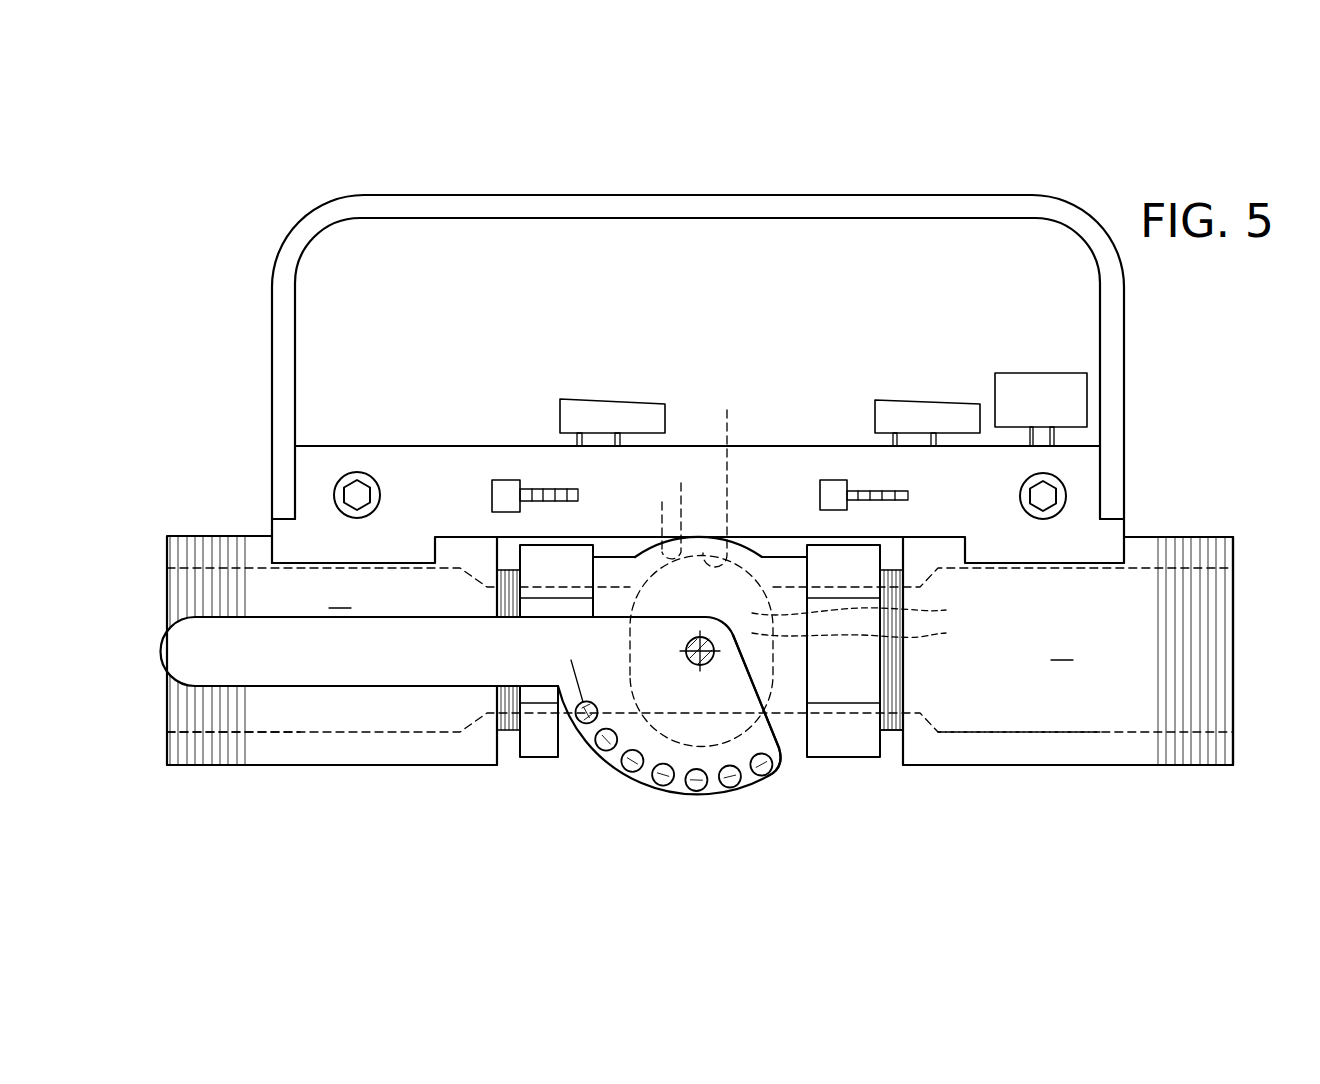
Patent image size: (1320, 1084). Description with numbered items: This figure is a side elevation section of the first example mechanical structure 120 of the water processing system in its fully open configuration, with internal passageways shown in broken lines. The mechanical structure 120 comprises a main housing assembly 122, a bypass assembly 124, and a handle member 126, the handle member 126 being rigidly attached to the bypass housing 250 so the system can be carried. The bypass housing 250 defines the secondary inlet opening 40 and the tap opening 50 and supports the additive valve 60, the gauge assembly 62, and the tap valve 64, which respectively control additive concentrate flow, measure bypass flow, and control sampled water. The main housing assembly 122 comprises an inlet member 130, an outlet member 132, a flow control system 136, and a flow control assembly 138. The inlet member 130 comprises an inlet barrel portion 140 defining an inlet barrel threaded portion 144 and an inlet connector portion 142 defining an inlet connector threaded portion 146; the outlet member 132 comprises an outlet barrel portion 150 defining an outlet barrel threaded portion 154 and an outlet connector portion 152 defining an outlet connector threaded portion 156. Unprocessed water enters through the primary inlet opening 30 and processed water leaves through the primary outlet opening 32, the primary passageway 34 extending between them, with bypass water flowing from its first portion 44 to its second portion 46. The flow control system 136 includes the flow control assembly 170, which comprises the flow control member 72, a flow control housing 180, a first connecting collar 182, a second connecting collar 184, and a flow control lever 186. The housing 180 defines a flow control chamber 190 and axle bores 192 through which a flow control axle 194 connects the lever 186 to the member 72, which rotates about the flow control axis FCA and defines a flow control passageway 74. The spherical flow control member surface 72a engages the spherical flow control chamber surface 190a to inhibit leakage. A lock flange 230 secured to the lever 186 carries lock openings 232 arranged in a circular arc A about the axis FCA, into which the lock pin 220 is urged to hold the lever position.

The handle member 126 is at (950, 208).
The first example mechanical structure 120 is at (1178, 371).
The main housing assembly 122 is at (1182, 533).
The bypass assembly 124 is at (393, 437).
The bypass housing 250 is at (462, 470).
The additive valve 60 is at (572, 407).
The tap valve 64 is at (903, 408).
The gauge assembly 62 is at (1020, 385).
The secondary inlet opening 40 is at (580, 493).
The tap opening 50 is at (908, 495).
The flow control chamber surface 190a is at (727, 410).
The flow control member 72 is at (681, 483).
The flow control member surface 72a is at (662, 502).
The second portion of the primary passageway 46 is at (487, 650).
The primary outlet opening 32 is at (167, 599).
The outlet barrel threaded portion 154 is at (188, 713).
The primary passageway 34 is at (333, 715).
The outlet member 132 is at (257, 767).
The outlet barrel portion 150 is at (302, 747).
The second connecting collar 184 is at (538, 562).
The outlet connector portion 152 is at (505, 600).
The outlet connector threaded portion 156 is at (510, 700).
The flow control lever 186 is at (185, 654).
The flow control assembly 170 is at (770, 547).
The axle bores 192 is at (695, 647).
The flow control axle 194 is at (687, 660).
The flow control axis FCA is at (712, 668).
The circular arc A is at (573, 672).
The lock pin 220 is at (580, 720).
The lock openings 232 is at (647, 784).
The lock flange 230 is at (677, 789).
The flow control system 136 is at (758, 817).
The flow control assembly 138 is at (773, 793).
The flow control chamber 190 is at (804, 651).
The flow control passageway 74 is at (862, 611).
The flow control housing 180 is at (783, 728).
The first connecting collar 182 is at (852, 735).
The inlet connector portion 142 is at (893, 667).
The inlet connector threaded portion 146 is at (890, 692).
The first portion of the primary passageway 44 is at (1068, 651).
The inlet barrel threaded portion 144 is at (1208, 665).
The primary inlet opening 30 is at (1235, 620).
The inlet barrel portion 140 is at (1067, 747).
The inlet member 130 is at (1135, 768).